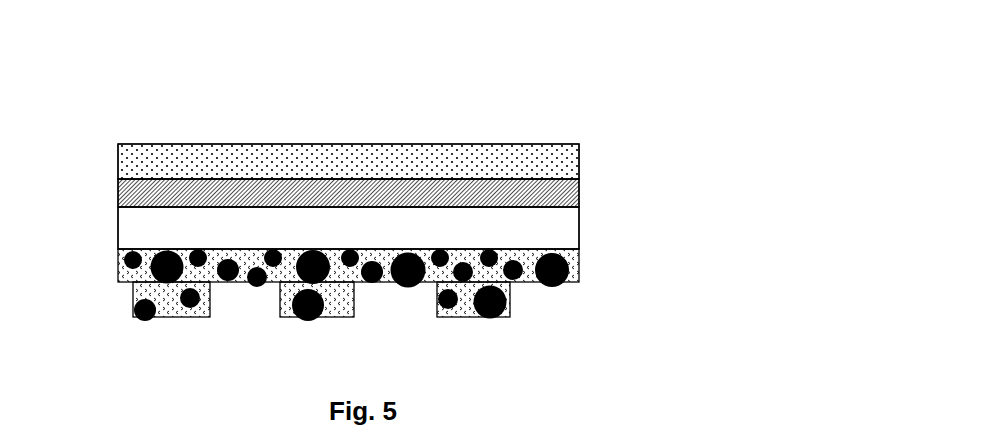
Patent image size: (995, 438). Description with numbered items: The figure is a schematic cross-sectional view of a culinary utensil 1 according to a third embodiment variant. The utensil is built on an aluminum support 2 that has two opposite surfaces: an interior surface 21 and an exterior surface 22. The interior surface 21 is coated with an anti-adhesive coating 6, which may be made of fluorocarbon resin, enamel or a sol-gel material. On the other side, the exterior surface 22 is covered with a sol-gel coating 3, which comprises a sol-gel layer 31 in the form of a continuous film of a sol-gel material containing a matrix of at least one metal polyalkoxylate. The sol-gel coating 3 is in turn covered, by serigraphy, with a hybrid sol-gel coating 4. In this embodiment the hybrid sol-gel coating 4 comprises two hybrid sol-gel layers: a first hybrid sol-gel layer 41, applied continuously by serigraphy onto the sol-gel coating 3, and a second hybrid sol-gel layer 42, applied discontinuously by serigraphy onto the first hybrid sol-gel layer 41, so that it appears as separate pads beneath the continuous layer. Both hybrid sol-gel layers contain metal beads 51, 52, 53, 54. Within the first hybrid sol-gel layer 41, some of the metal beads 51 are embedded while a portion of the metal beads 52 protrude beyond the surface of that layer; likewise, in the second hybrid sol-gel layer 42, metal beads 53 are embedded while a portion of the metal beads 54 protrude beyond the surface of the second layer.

The culinary utensil 1 is at (533, 111).
The aluminum support 2 is at (572, 192).
The interior surface 21 is at (140, 178).
The exterior surface 22 is at (140, 207).
The sol-gel coating 3 is at (390, 261).
The sol-gel layer 31 is at (574, 229).
The hybrid sol-gel coating 4 is at (383, 308).
The first hybrid sol-gel layer 41 is at (574, 262).
The second hybrid sol-gel layer 42 is at (513, 290).
The metal beads 51 is at (128, 280).
The metal beads 52 is at (257, 288).
The metal beads 53 is at (190, 308).
The metal beads 54 is at (313, 320).
The anti-adhesive coating 6 is at (579, 144).